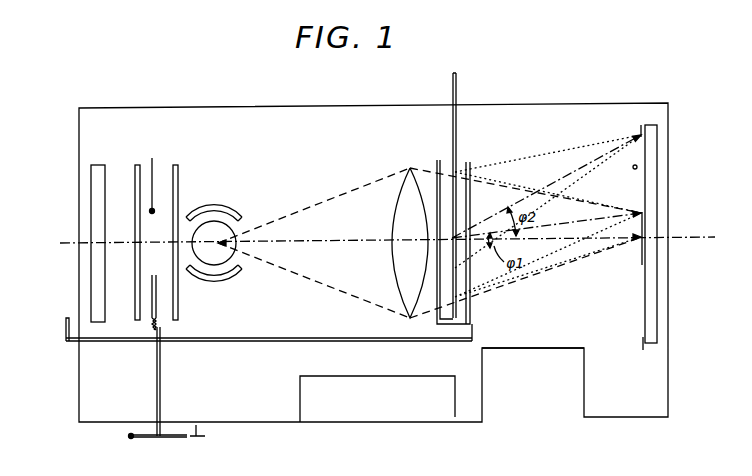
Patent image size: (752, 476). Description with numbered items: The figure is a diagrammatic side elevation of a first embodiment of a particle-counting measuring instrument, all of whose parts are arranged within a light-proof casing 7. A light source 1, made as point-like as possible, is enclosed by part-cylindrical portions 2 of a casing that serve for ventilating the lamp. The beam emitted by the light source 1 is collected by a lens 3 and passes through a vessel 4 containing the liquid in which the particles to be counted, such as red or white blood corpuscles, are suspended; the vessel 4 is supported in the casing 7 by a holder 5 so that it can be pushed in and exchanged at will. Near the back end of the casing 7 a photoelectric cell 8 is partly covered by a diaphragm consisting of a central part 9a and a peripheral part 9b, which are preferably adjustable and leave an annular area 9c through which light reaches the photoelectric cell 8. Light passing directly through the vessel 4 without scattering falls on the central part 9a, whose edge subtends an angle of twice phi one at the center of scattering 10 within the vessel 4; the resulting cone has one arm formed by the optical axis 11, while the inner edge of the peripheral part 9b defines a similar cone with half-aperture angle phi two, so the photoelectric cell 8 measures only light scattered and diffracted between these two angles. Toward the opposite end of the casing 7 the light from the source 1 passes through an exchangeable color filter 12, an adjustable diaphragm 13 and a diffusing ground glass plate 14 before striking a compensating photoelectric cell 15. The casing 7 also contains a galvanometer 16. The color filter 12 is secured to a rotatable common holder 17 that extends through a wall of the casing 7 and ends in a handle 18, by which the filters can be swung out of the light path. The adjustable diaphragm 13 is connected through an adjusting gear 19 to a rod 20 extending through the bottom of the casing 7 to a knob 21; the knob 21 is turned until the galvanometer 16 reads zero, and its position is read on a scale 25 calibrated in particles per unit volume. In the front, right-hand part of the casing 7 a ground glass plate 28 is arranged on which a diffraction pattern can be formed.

The light source 1 is at (229, 232).
The part-cylindrical portions 2 is at (218, 208).
The lens 3 is at (397, 212).
The vessel 4 is at (438, 167).
The holder 5 is at (457, 85).
The casing 7 is at (334, 105).
The photoelectric cell 8 is at (658, 143).
The central part 9a is at (642, 264).
The peripheral part 9b is at (640, 131).
The annular area 9c is at (642, 186).
The center of scattering 10 is at (454, 237).
The optical axis 11 is at (377, 238).
The color filter 12 is at (178, 178).
The adjustable diaphragm 13 is at (153, 159).
The diffusing ground glass plate 14 is at (136, 170).
The compensating photoelectric cell 15 is at (91, 186).
The galvanometer 16 is at (384, 407).
The common holder 17 is at (233, 341).
The handle 18 is at (66, 323).
The adjusting gear 19 is at (158, 277).
The rod 20 is at (161, 381).
The knob 21 is at (132, 439).
The scale 25 is at (205, 436).
The ground glass plate 28 is at (521, 351).